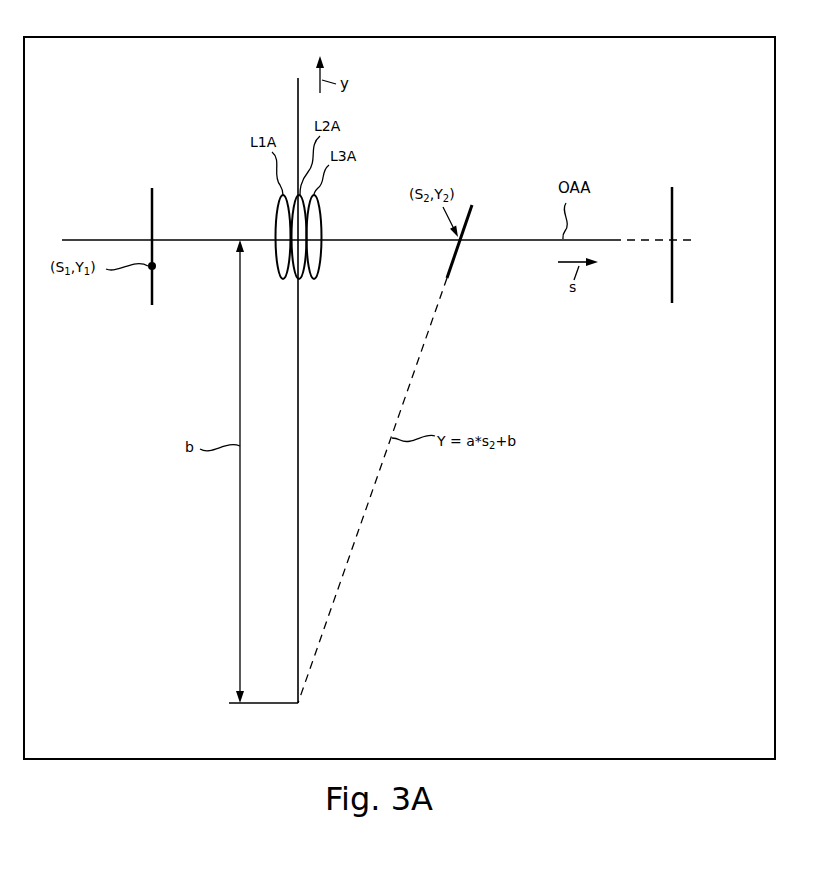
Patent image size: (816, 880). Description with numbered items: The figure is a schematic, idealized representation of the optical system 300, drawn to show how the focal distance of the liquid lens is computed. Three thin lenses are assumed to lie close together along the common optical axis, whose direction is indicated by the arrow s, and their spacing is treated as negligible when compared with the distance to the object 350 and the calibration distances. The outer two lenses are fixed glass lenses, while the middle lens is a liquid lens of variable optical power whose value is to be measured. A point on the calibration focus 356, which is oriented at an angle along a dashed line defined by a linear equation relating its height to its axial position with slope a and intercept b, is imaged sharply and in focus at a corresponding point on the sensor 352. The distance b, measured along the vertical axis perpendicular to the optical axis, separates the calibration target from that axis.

The optical system 300 is at (610, 113).
The object 350 is at (672, 197).
The sensor 352 is at (152, 200).
The calibration focus 356 is at (480, 209).